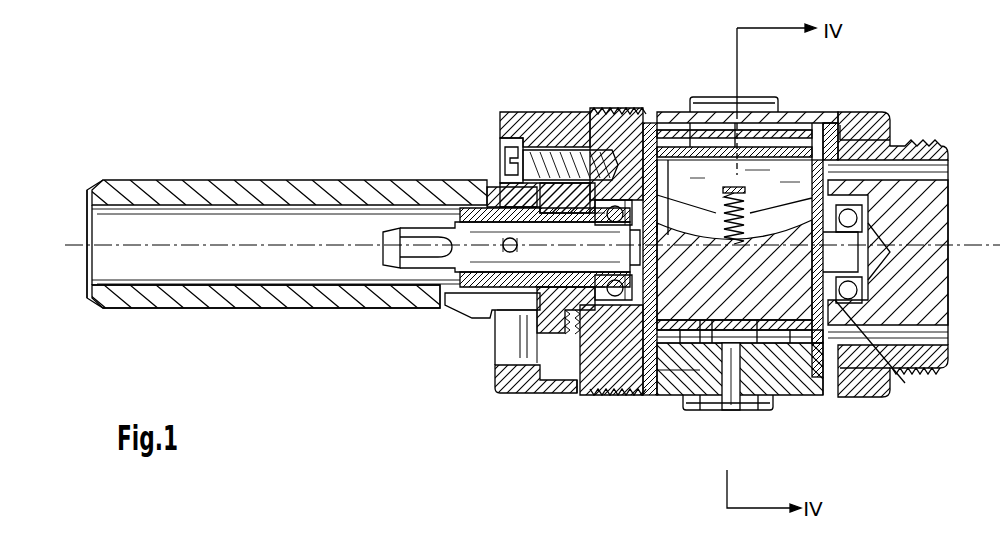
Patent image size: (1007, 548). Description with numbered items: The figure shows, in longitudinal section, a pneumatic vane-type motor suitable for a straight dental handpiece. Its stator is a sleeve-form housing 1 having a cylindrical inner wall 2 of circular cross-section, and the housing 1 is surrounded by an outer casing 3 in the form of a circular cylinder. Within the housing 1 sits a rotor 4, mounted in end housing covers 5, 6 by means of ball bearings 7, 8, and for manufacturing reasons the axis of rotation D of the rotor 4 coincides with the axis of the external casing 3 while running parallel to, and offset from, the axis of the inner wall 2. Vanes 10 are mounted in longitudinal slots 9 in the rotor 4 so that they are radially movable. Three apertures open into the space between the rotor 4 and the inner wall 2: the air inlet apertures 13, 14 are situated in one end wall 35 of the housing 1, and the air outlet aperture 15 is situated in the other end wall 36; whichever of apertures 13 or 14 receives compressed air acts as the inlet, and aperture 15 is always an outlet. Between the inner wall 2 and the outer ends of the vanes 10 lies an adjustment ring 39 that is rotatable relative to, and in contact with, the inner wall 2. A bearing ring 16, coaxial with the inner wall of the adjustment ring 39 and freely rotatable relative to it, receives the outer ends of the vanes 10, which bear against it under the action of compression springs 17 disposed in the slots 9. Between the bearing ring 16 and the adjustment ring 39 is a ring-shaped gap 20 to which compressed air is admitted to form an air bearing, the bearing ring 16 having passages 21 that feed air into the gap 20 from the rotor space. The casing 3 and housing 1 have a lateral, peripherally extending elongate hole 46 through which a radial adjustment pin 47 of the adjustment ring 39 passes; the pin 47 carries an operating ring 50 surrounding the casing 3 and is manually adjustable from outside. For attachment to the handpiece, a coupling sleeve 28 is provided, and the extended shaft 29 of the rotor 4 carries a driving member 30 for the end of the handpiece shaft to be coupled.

The housing 1 is at (803, 112).
The cylindrical inner wall 2 is at (663, 128).
The outer casing 3 is at (877, 112).
The rotor 4 is at (790, 322).
The end housing cover 5 is at (565, 112).
The end housing cover 6 is at (930, 242).
The ball bearing 7 is at (617, 110).
The ball bearing 8 is at (858, 218).
The longitudinal slot 9 is at (652, 123).
The vane 10 is at (780, 165).
The air inlet aperture 13 is at (830, 358).
The air inlet aperture 14 is at (862, 385).
The air outlet aperture 15 is at (820, 118).
The bearing ring 16 is at (690, 110).
The compression spring 17 is at (748, 220).
The ring-shaped gap 20 is at (808, 347).
The passage 21 is at (716, 135).
The coupling sleeve 28 is at (265, 180).
The extended shaft 29 is at (497, 188).
The driving member 30 is at (405, 268).
The end wall 35 is at (880, 352).
The end wall 36 is at (657, 380).
The adjustment ring 39 is at (752, 143).
The elongate hole 46 is at (706, 399).
The adjustment pin 47 is at (739, 392).
The operating ring 50 is at (728, 411).
The axis of rotation D is at (70, 245).